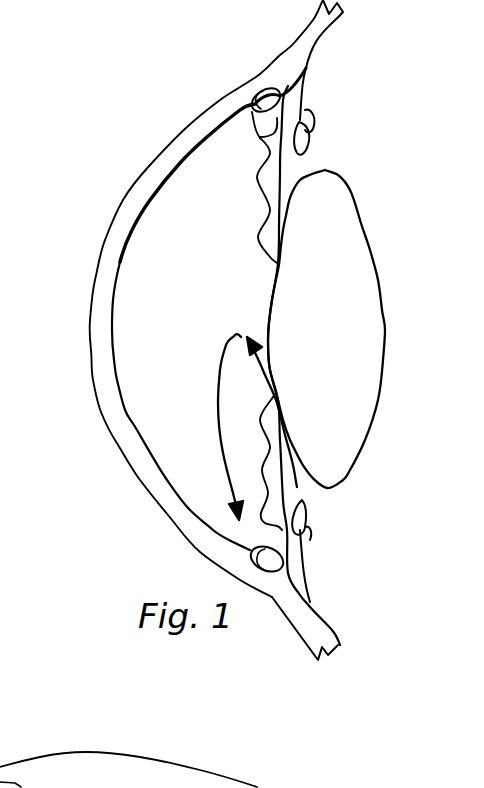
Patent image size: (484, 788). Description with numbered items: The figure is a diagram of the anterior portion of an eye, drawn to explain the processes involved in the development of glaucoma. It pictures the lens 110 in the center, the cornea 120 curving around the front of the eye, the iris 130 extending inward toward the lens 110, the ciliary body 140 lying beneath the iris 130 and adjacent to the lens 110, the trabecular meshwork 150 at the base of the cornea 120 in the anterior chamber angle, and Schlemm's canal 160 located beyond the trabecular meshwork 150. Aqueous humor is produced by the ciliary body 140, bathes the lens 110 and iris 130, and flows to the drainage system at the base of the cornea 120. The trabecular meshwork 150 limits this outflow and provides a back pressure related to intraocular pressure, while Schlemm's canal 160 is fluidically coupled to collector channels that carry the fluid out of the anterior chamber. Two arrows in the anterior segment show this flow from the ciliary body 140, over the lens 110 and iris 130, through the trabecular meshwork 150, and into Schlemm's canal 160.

The lens 110 is at (353, 467).
The cornea 120 is at (117, 212).
The iris 130 is at (258, 188).
The ciliary body 140 is at (310, 147).
The trabecular meshwork 150 is at (268, 110).
The Schlemm's canal 160 is at (257, 88).